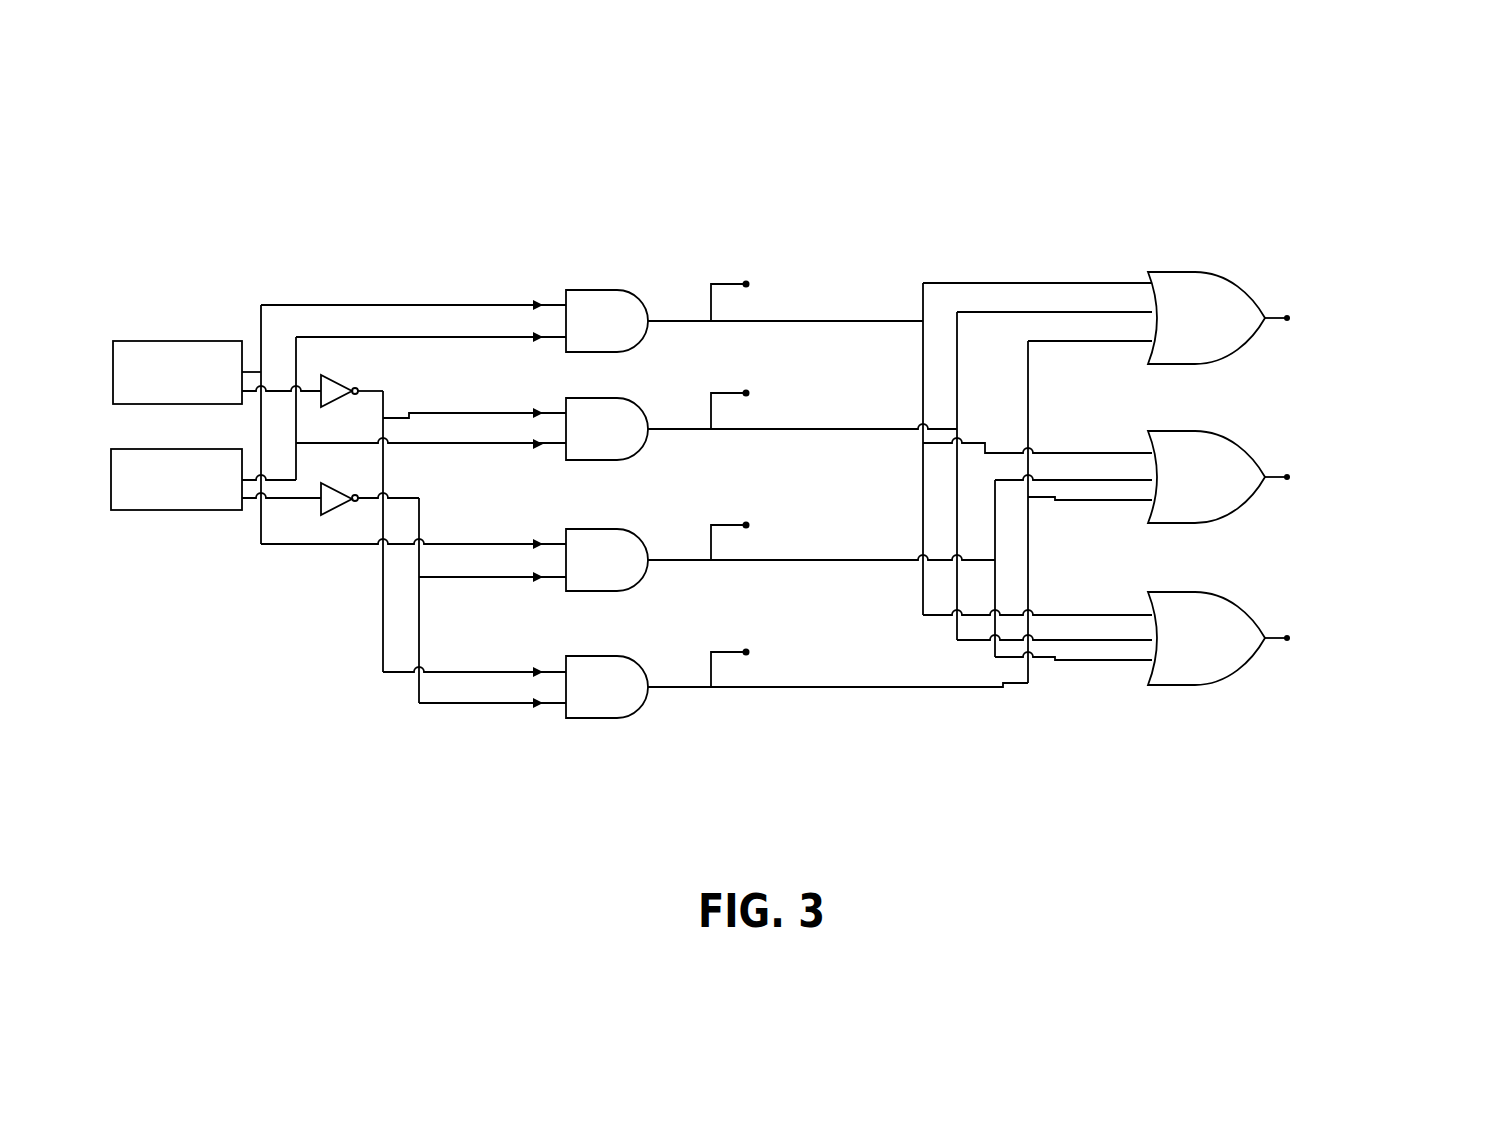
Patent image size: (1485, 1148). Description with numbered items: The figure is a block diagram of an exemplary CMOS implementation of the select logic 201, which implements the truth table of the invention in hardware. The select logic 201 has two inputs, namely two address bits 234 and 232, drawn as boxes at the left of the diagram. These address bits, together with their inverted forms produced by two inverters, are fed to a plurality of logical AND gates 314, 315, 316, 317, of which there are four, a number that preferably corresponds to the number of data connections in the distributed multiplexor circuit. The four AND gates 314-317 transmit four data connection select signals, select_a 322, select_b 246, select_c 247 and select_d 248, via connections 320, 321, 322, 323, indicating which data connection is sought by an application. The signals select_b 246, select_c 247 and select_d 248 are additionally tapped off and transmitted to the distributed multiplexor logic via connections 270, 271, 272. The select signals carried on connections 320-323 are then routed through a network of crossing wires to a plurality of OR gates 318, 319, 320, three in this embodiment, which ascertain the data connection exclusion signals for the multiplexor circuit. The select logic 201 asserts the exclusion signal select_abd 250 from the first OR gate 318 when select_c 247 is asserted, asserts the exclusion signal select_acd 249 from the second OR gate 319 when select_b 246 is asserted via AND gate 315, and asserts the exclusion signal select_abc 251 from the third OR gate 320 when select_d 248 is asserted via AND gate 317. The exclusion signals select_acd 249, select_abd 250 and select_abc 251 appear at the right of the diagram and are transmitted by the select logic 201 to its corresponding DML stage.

The select logic 201 is at (953, 108).
The address bit 234 is at (167, 341).
The address bit 232 is at (172, 510).
The logical AND gate 314 is at (625, 287).
The logical AND gate 315 is at (622, 397).
The logical AND gate 316 is at (622, 528).
The logical AND gate 317 is at (622, 655).
The OR gate 318 is at (1223, 274).
The OR gate 319 is at (1223, 432).
The connection 320 is at (782, 322).
The connection 321 is at (782, 431).
The connection 322 is at (782, 562).
The connection 323 is at (782, 689).
The connection 270 is at (803, 394).
The connection 271 is at (803, 525).
The connection 272 is at (803, 652).
The select_b data connection select signal 246 is at (825, 394).
The select_c data connection select signal 247 is at (825, 526).
The select_d data connection select signal 248 is at (825, 653).
The select_acd data connection exclusion signal 249 is at (1361, 477).
The select_abd data connection exclusion signal 250 is at (1361, 318).
The select_abc data connection exclusion signal 251 is at (1361, 638).